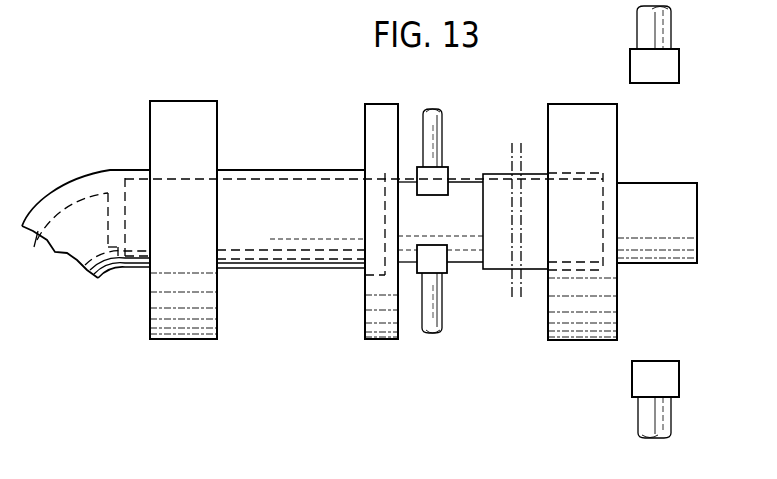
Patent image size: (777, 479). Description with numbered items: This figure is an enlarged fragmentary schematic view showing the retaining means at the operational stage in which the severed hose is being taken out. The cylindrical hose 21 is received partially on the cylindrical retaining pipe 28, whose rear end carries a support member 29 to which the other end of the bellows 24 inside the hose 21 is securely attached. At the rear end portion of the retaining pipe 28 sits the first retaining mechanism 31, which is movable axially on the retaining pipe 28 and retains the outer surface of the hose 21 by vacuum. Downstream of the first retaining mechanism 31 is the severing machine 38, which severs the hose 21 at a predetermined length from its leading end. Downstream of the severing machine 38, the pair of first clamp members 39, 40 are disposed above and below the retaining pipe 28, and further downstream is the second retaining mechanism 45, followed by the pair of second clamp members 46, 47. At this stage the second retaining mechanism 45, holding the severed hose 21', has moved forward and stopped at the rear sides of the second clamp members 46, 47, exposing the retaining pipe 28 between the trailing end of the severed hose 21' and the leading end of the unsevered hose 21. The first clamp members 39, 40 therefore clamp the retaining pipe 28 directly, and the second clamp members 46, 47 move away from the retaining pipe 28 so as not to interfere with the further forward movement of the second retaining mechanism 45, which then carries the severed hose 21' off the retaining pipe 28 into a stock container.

The cylindrical hose 21 is at (86, 212).
The severed hose 21' is at (528, 235).
The bellows 24 is at (34, 250).
The retaining pipe 28 is at (645, 182).
The support member 29 is at (114, 262).
The first retaining mechanism 31 is at (188, 105).
The severing machine 38 is at (381, 108).
The first clamp member 39 is at (450, 173).
The first clamp member 40 is at (447, 268).
The second retaining mechanism 45 is at (575, 103).
The second clamp member 46 is at (648, 83).
The second clamp member 47 is at (655, 360).